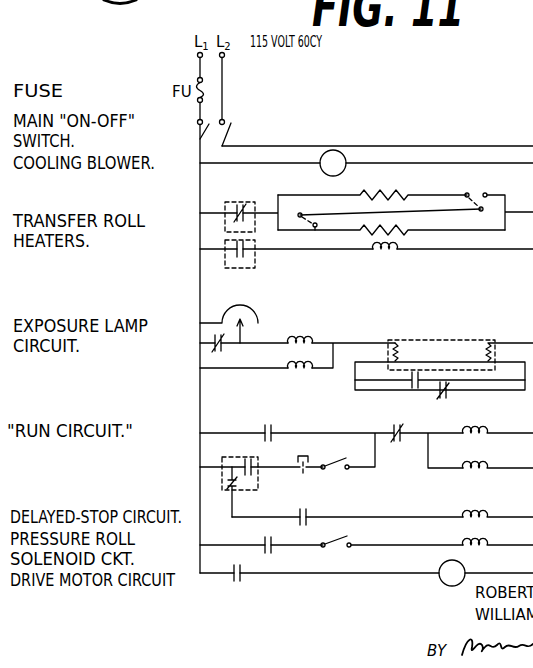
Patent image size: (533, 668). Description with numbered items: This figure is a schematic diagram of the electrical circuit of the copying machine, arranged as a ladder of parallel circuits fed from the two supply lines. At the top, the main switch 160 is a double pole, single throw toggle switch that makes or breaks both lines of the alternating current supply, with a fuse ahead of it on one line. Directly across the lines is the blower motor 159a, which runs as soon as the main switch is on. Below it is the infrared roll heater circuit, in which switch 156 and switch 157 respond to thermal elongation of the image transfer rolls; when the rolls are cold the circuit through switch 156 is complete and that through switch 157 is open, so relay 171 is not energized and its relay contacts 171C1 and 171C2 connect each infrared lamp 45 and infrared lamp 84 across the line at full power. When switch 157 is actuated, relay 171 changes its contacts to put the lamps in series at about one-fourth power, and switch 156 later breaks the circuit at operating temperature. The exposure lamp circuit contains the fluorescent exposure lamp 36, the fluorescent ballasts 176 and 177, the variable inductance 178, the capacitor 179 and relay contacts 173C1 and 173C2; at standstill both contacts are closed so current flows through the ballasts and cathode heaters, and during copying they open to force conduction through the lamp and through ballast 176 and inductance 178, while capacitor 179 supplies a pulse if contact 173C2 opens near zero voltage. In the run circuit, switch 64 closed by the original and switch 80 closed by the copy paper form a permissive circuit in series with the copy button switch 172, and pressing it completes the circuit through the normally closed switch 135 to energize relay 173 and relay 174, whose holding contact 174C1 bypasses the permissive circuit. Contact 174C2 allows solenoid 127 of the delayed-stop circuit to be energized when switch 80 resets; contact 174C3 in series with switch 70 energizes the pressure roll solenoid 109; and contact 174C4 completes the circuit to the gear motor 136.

The main switch 160 is at (232, 133).
The blower motor 159a is at (342, 151).
The switch 156 is at (252, 206).
The switch 157 is at (256, 268).
The infrared lamp 45 is at (406, 190).
The infrared lamp 84 is at (410, 227).
The relay contact 171C1 is at (377, 231).
The relay contact 171C2 is at (488, 201).
The relay 171 is at (374, 254).
The variable inductance 178 is at (256, 308).
The fluorescent ballast 176 is at (304, 339).
The fluorescent ballast 177 is at (297, 371).
The relay contact 173C1 is at (219, 354).
The exposure lamp 36 is at (441, 338).
The capacitor 179 is at (410, 395).
The relay contact 173C2 is at (434, 401).
The holding contact 174C1 is at (265, 423).
The switch 80 is at (240, 456).
The copy button switch 172 is at (298, 477).
The switch 64 is at (335, 473).
The normally closed switch 135 is at (412, 449).
The relay 173 is at (489, 433).
The relay 174 is at (489, 465).
The solenoid 127 is at (481, 515).
The relay contact 174C2 is at (294, 527).
The relay contact 174C3 is at (265, 555).
The switch 70 is at (340, 546).
The solenoid 109 is at (481, 548).
The relay contact 174C4 is at (227, 584).
The gear motor 136 is at (437, 582).